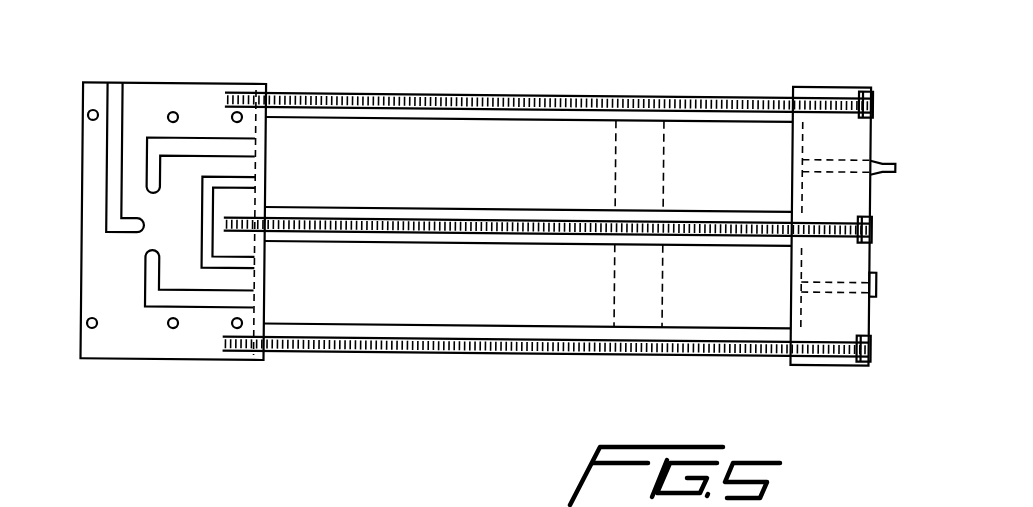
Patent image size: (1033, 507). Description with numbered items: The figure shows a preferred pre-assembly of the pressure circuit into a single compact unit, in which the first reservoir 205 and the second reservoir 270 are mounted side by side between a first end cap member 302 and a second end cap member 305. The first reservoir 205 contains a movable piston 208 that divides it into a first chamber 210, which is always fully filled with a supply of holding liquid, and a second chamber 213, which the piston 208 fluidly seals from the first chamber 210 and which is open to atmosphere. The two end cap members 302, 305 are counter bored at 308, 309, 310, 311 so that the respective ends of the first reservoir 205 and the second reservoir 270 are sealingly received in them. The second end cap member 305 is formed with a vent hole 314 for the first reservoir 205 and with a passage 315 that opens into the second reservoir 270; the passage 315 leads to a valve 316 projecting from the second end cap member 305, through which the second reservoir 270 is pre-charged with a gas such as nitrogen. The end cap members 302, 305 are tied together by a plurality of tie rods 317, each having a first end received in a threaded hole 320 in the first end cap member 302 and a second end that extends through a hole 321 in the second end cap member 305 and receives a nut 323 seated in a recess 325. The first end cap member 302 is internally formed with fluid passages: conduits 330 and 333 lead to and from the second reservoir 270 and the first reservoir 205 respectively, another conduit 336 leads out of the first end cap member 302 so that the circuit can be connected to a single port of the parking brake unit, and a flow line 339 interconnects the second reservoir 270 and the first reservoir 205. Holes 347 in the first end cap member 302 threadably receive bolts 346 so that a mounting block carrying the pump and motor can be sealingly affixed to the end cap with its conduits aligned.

The first end cap member 302 is at (159, 89).
The conduit 336 is at (111, 99).
The holes 347 is at (89, 340).
The conduit 330 is at (199, 141).
The conduit 333 is at (206, 303).
The flow line 339 is at (222, 206).
The threaded hole 320 is at (261, 92).
The tie rods 317 is at (499, 90).
The counter bore 308 is at (265, 170).
The counter bore 309 is at (265, 243).
The first reservoir 205 is at (491, 331).
The second reservoir 270 is at (573, 223).
The first chamber 210 is at (433, 284).
The second chamber 213 is at (719, 284).
The movable piston 208 is at (646, 266).
The hole 321 is at (827, 82).
The counter bore 310 is at (802, 140).
The passage 315 is at (825, 165).
The counter bore 311 is at (804, 307).
The second end cap member 305 is at (872, 89).
The nut 323 is at (873, 224).
The recess 325 is at (873, 339).
The valve 316 is at (873, 154).
The vent hole 314 is at (874, 287).
The bolts 346 is at (248, 500).